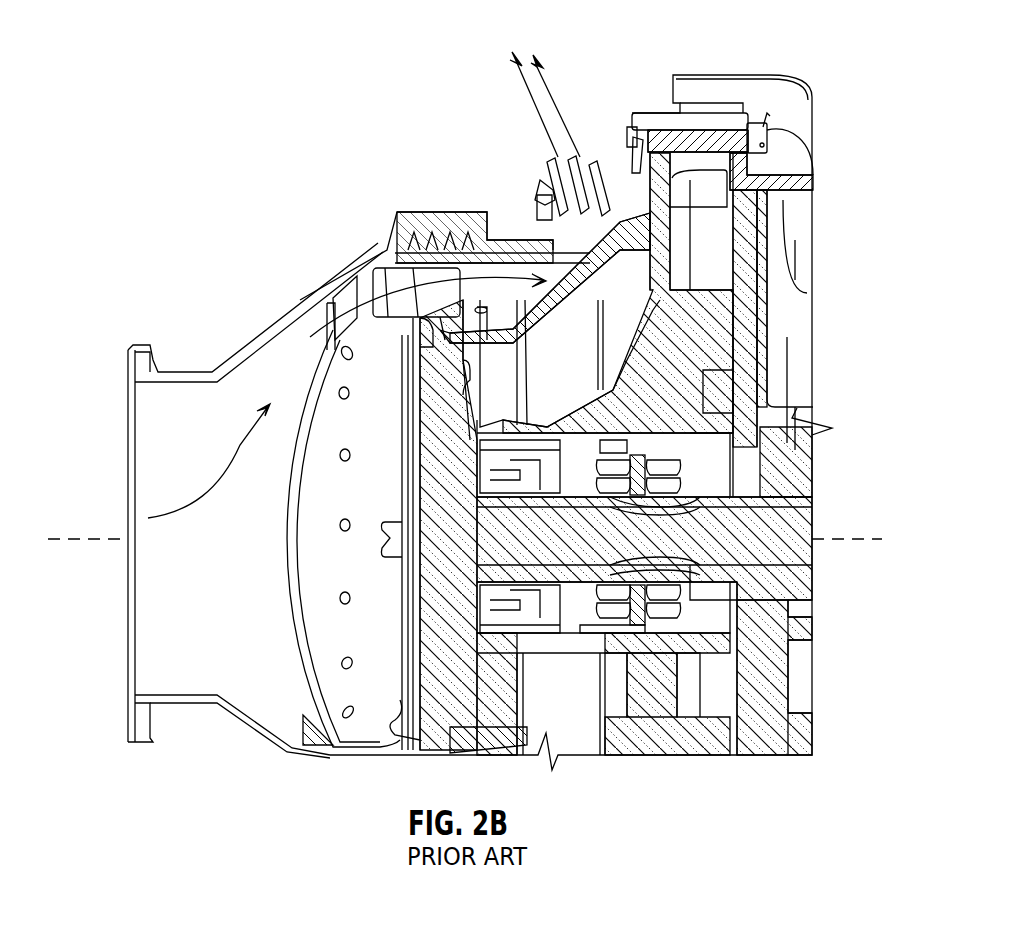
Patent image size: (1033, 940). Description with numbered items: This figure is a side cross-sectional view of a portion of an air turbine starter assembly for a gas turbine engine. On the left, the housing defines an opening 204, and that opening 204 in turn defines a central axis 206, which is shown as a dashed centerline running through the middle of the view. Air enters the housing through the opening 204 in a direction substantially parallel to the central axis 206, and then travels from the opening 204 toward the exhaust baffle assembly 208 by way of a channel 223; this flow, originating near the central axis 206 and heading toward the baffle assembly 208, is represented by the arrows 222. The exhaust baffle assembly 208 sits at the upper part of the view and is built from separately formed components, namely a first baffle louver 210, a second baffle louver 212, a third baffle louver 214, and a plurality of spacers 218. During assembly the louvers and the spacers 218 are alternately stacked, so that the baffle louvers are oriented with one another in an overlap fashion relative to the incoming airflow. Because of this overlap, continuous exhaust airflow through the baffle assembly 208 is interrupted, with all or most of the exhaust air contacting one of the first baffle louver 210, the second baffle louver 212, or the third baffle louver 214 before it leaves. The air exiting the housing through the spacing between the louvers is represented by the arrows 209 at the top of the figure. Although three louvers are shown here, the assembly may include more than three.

The opening 204 is at (108, 625).
The central axis 206 is at (72, 538).
The exhaust baffle assembly 208 is at (455, 105).
The arrows 209 is at (537, 62).
The first baffle louver 210 is at (547, 180).
The second baffle louver 212 is at (540, 192).
The third baffle louver 214 is at (583, 187).
The spacers 218 is at (580, 160).
The arrows 222 is at (220, 462).
The channel 223 is at (318, 325).